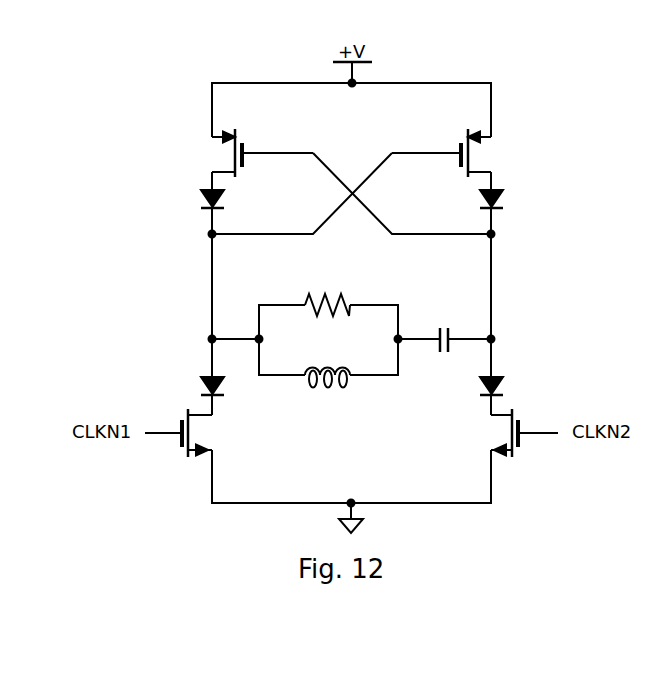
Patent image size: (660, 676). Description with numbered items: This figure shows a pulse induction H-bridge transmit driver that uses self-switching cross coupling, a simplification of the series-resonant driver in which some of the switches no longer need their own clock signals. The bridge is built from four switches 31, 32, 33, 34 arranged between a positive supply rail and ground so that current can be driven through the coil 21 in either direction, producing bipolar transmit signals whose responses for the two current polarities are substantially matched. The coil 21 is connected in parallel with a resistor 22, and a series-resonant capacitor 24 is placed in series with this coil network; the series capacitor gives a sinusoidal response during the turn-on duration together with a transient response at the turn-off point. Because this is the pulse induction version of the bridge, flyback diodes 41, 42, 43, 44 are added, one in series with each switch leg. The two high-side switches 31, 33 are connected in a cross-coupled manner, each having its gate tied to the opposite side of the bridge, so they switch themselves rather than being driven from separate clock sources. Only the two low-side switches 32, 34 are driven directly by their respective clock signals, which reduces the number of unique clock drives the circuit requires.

The coil 21 is at (328, 362).
The resistor 22 is at (327, 293).
The series-resonant capacitor 24 is at (435, 337).
The switch 31 is at (211, 153).
The switch 32 is at (210, 433).
The switch 33 is at (491, 153).
The switch 34 is at (490, 433).
The flyback diode 41 is at (197, 200).
The flyback diode 42 is at (197, 385).
The flyback diode 43 is at (506, 200).
The flyback diode 44 is at (506, 386).